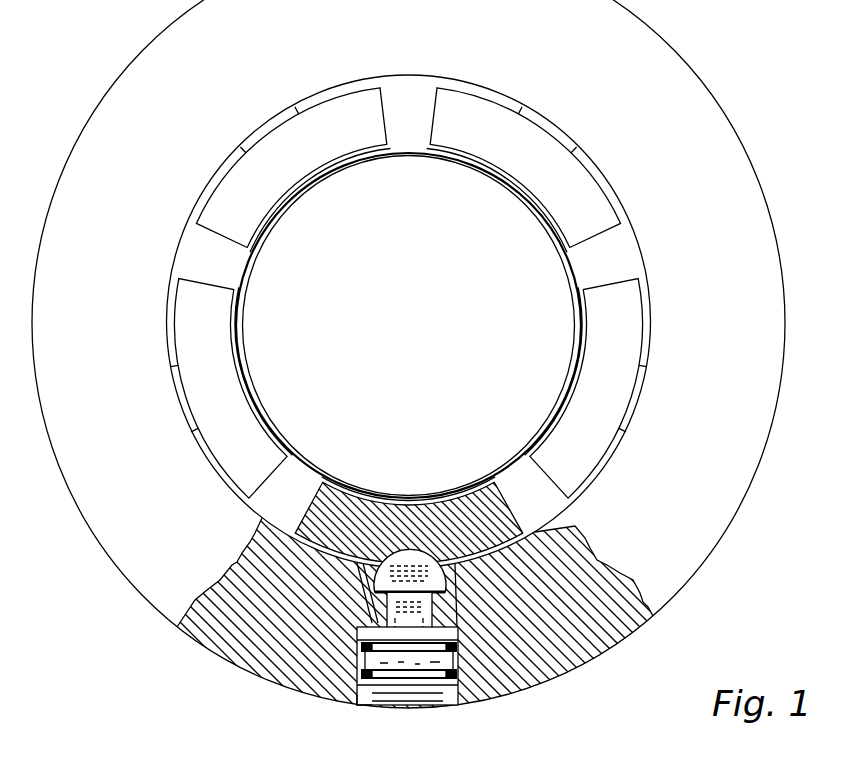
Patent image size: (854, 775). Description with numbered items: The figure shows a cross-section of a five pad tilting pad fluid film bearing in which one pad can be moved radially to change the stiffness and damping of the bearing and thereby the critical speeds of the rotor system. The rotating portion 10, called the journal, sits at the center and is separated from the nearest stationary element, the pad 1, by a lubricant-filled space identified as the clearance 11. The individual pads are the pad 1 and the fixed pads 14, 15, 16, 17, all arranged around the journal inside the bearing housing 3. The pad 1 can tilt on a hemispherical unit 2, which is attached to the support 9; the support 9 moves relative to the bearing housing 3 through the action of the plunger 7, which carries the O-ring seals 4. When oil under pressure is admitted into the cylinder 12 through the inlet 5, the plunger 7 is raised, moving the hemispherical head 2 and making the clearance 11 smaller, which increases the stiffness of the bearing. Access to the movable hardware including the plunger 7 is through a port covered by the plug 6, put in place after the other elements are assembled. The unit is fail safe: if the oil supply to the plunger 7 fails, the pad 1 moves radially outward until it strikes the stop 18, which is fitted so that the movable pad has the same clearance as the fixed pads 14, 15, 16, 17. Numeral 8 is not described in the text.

The pad 1 is at (317, 486).
The hemispherical unit 2 is at (414, 569).
The bearing housing 3 is at (679, 493).
The O-ring seals 4 is at (512, 680).
The inlet 5 is at (458, 689).
The plug 6 is at (404, 704).
The plunger 7 is at (366, 684).
The pin 8 is at (407, 630).
The support 9 is at (376, 652).
The rotating portion 10 is at (407, 268).
The clearance 11 is at (492, 482).
The cylinder 12 is at (358, 703).
The pad 14 is at (614, 405).
The pad 15 is at (554, 176).
The pad 16 is at (279, 176).
The pad 17 is at (222, 402).
The stop 18 is at (450, 591).